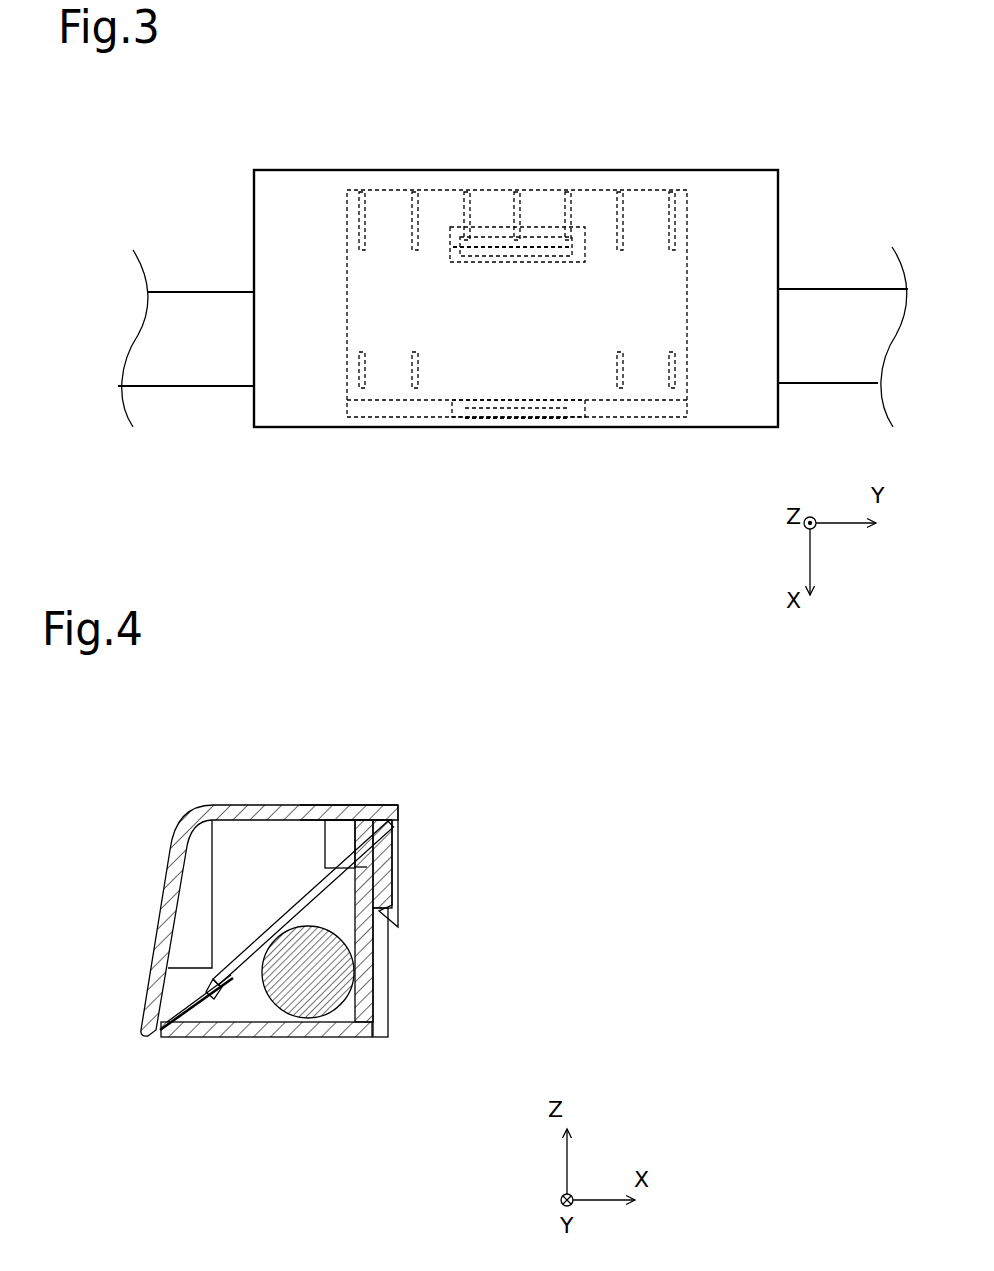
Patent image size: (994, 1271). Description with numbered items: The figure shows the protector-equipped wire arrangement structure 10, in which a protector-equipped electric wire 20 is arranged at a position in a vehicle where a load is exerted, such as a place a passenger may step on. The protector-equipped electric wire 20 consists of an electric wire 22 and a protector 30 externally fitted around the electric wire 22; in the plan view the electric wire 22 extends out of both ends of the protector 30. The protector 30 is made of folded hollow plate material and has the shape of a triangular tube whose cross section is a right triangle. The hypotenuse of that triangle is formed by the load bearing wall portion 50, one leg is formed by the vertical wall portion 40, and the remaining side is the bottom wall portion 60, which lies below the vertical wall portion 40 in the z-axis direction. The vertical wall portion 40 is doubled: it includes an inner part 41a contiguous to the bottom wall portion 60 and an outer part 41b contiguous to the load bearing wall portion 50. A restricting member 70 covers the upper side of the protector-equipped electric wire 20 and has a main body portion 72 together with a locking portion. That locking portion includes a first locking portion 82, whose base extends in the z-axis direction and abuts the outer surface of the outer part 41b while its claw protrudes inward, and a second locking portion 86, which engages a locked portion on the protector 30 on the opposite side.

In FIG. 3, the protector-equipped wire arrangement structure 10 is at (337, 134).
In FIG. 4, the protector-equipped wire arrangement structure 10 is at (136, 751).
In FIG. 4, the protector-equipped electric wire 20 is at (294, 1103).
In FIG. 3, the electric wire 22 is at (823, 368).
In FIG. 4, the electric wire 22 is at (262, 998).
In FIG. 3, the protector 30 is at (651, 433).
In FIG. 4, the protector 30 is at (286, 1041).
In FIG. 4, the vertical wall portion 40 is at (460, 925).
In FIG. 4, the inner part 41a is at (366, 940).
In FIG. 4, the outer part 41b is at (382, 970).
In FIG. 4, the load bearing wall portion 50 is at (278, 920).
In FIG. 4, the bottom wall portion 60 is at (322, 1018).
In FIG. 4, the restricting member 70 is at (292, 804).
In FIG. 4, the main body portion 72 is at (360, 804).
In FIG. 4, the first locking portion 82 is at (402, 869).
In FIG. 4, the second locking portion 86 is at (217, 859).